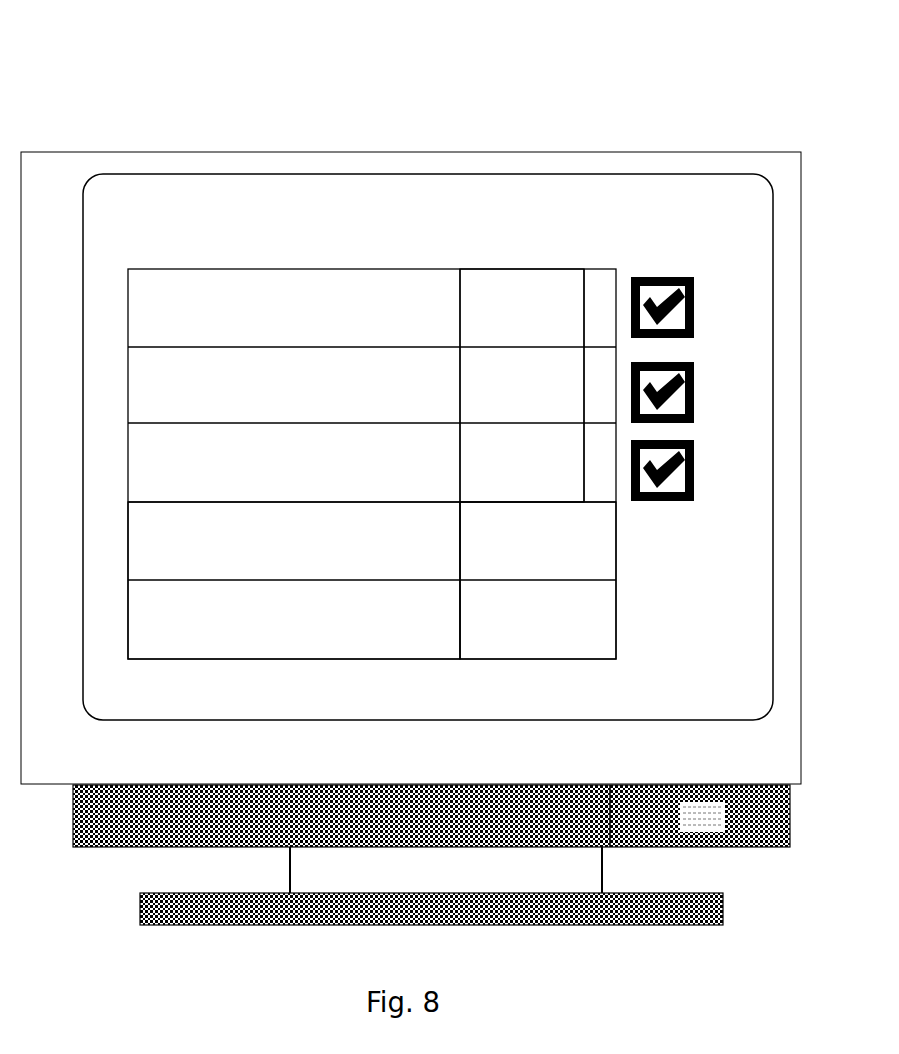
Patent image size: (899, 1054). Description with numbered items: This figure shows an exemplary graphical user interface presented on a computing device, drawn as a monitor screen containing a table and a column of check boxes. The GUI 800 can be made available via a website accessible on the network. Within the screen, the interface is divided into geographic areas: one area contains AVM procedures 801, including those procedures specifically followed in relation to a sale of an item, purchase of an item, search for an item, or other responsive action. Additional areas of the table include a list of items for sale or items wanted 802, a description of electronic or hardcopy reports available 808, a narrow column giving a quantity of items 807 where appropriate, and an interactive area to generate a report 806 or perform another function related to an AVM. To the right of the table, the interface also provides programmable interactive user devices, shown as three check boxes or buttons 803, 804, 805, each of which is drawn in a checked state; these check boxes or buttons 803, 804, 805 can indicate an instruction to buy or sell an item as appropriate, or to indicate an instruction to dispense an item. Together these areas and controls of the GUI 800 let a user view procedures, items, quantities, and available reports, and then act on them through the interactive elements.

The GUI 800 is at (411, 501).
The AVM procedures 801 is at (200, 308).
The list of items for sale or items wanted 802 is at (522, 313).
The check box or button 803 is at (685, 308).
The check box or button 804 is at (685, 393).
The check box or button 805 is at (685, 471).
The interactive area to generate a report 806 is at (538, 557).
The quantity of items 807 is at (600, 313).
The description of electronic or hardcopy reports available 808 is at (257, 549).